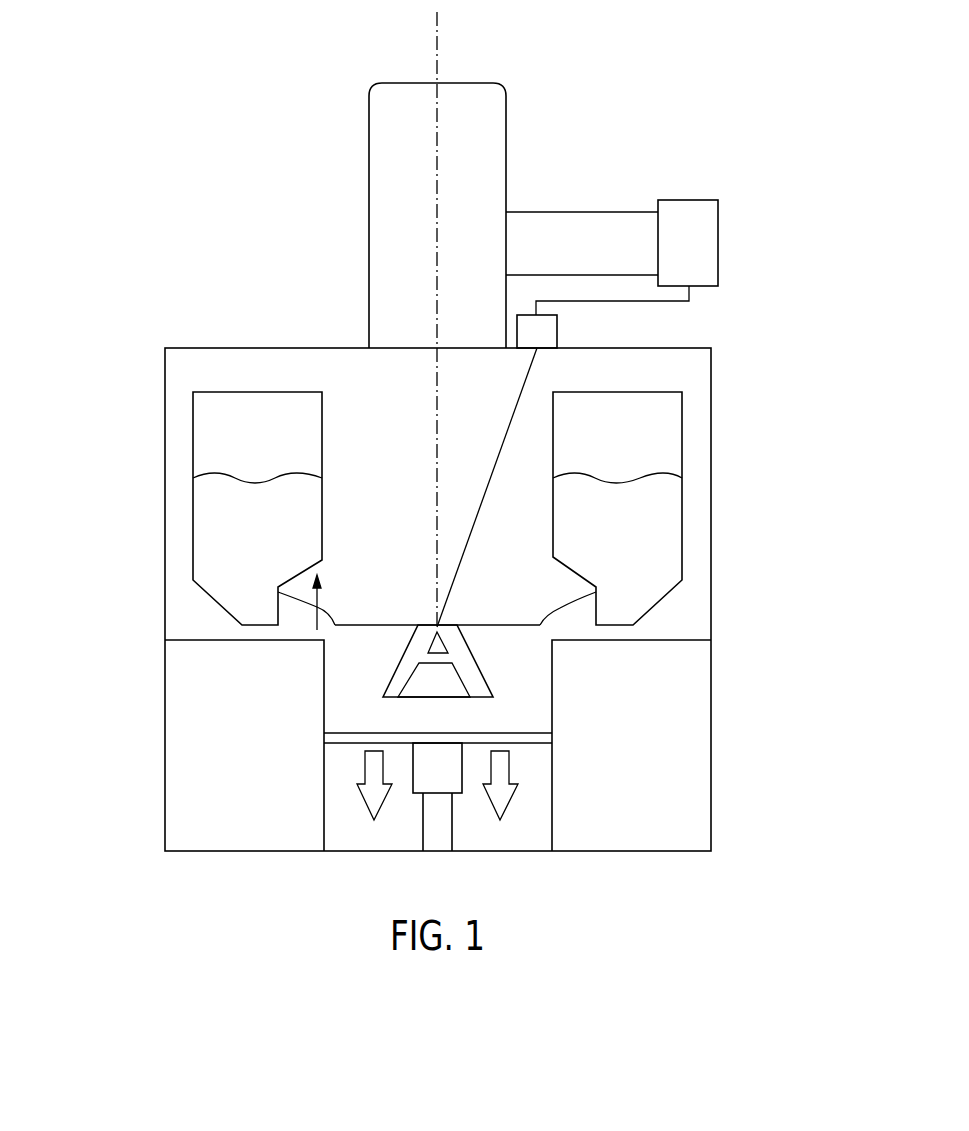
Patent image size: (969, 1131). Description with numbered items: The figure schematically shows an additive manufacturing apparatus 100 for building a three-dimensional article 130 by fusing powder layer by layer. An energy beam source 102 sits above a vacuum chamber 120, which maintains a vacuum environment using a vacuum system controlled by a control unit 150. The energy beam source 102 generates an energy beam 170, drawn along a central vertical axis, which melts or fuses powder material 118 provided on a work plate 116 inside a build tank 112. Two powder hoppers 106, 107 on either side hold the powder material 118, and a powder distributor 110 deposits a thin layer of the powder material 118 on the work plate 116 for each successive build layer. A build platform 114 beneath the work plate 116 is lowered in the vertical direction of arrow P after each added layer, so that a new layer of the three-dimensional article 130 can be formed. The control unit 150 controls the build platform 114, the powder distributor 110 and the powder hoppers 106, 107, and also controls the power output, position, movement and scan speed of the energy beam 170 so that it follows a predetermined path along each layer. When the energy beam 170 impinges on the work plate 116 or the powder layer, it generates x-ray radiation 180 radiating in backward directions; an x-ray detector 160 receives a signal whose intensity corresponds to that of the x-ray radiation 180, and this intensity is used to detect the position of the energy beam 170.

The manufacturing apparatus 100 is at (602, 165).
The energy beam source 102 is at (346, 170).
The powder hopper 106 is at (193, 485).
The powder hopper 107 is at (682, 485).
The powder distributor 110 is at (320, 600).
The build tank 112 is at (324, 780).
The build platform 114 is at (535, 745).
The work plate 116 is at (423, 693).
The powder material 118 is at (540, 667).
The vacuum chamber 120 is at (711, 735).
The three-dimensional article 130 is at (468, 667).
The control unit 150 is at (718, 242).
The x-ray detector 160 is at (557, 335).
The energy beam 170 is at (438, 53).
The x-ray radiation 180 is at (500, 450).